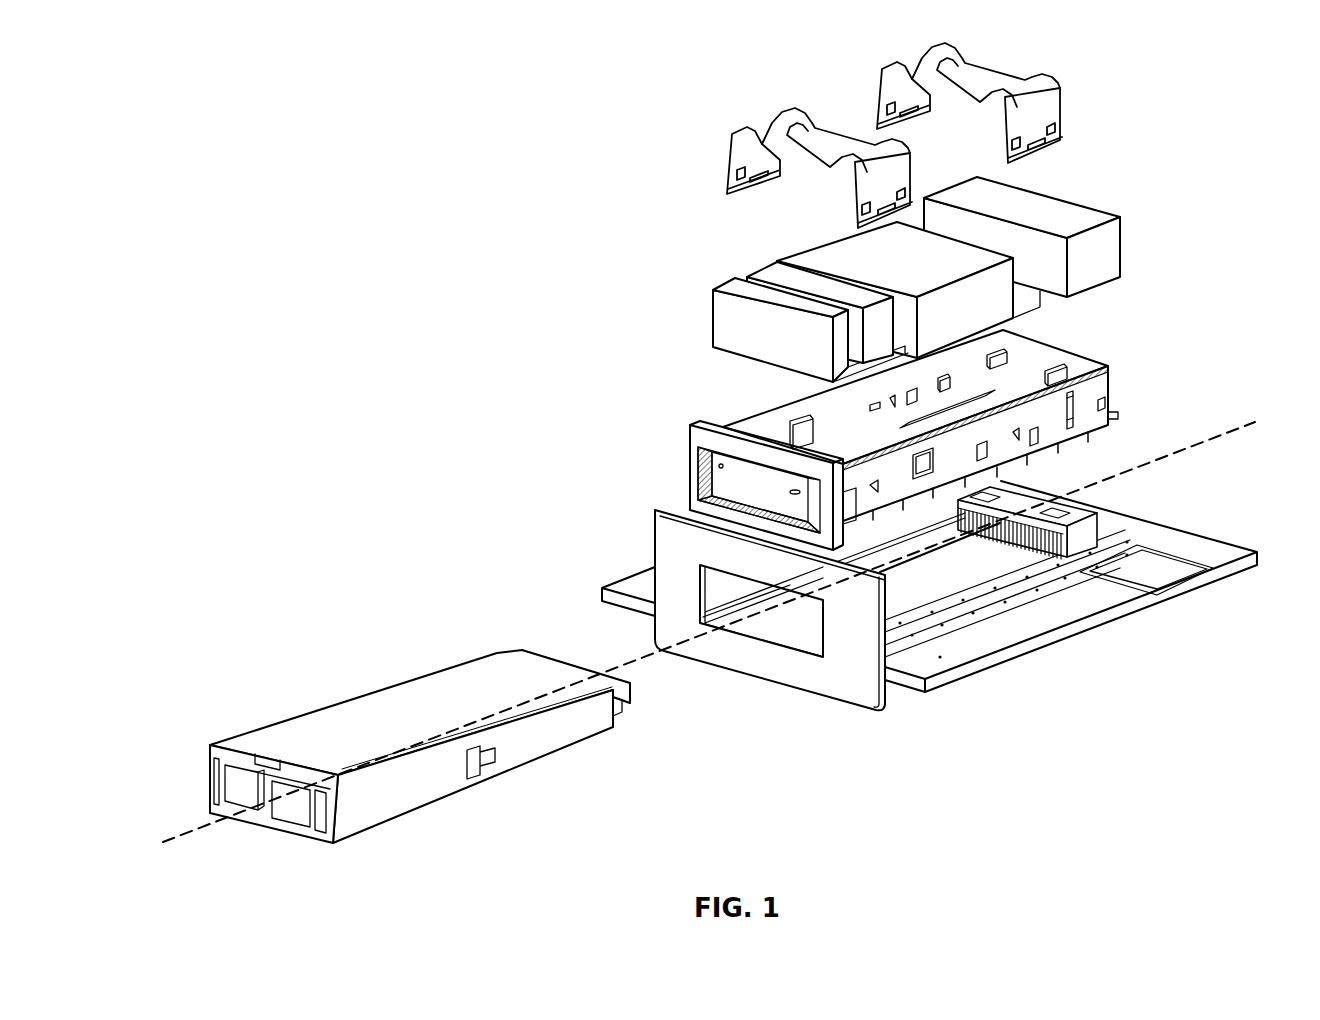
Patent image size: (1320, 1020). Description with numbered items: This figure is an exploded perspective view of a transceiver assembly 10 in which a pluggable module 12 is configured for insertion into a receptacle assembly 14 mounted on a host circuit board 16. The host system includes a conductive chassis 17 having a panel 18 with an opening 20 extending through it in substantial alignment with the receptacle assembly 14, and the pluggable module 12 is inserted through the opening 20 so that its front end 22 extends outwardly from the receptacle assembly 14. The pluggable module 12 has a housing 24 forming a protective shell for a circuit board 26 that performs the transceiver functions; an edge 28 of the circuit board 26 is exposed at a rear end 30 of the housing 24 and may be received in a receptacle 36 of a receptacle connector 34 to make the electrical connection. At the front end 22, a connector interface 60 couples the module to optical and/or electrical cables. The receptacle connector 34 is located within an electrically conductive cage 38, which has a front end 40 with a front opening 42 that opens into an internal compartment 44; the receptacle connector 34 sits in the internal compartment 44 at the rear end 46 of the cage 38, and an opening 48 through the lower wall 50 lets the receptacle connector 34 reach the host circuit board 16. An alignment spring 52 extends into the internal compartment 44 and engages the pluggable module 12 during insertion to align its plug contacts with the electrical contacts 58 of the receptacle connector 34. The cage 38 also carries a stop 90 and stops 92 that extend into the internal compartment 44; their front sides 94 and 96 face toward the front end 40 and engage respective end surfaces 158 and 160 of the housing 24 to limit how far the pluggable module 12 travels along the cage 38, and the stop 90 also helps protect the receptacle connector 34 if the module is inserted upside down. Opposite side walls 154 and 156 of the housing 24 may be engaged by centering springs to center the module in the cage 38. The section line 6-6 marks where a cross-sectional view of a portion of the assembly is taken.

The section line 6- 6 is at (157, 845).
The transceiver assembly 10 is at (355, 276).
The pluggable module 12 is at (455, 721).
The receptacle assembly 14 is at (894, 409).
The host circuit board 16 is at (1060, 637).
The conductive chassis 17 is at (915, 705).
The panel 18 is at (827, 626).
The opening 20 is at (818, 637).
The front end 22 is at (266, 773).
The housing 24 is at (522, 756).
The circuit board 26 is at (626, 705).
The edge 28 is at (626, 720).
The rear end 30 is at (489, 633).
The receptacle connector 34 is at (1060, 507).
The receptacle 36 is at (1050, 542).
The cage 38 is at (1102, 395).
The front end 40 is at (733, 479).
The front opening 42 is at (719, 481).
The internal compartment 44 is at (941, 406).
The rear end 46 is at (1088, 358).
The opening 48 is at (995, 385).
The lower wall 50 is at (850, 448).
The alignment spring 52 is at (1070, 410).
The electrical contacts 58 is at (1018, 515).
The connector interface 60 is at (280, 812).
The stop 90 is at (950, 380).
The stops 92 is at (985, 362).
The front side 94 is at (836, 425).
The front sides 96 is at (1005, 386).
The side wall 154 is at (428, 784).
The side wall 156 is at (407, 675).
The end surface 158 is at (623, 722).
The end surface 160 is at (630, 689).